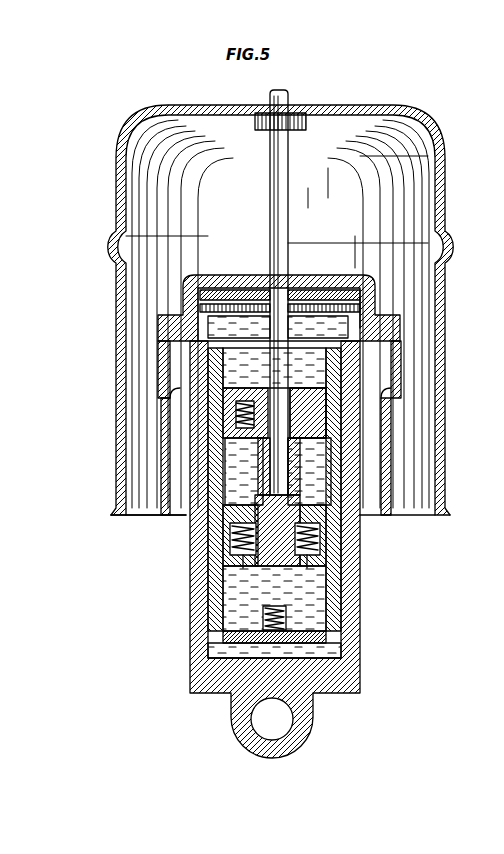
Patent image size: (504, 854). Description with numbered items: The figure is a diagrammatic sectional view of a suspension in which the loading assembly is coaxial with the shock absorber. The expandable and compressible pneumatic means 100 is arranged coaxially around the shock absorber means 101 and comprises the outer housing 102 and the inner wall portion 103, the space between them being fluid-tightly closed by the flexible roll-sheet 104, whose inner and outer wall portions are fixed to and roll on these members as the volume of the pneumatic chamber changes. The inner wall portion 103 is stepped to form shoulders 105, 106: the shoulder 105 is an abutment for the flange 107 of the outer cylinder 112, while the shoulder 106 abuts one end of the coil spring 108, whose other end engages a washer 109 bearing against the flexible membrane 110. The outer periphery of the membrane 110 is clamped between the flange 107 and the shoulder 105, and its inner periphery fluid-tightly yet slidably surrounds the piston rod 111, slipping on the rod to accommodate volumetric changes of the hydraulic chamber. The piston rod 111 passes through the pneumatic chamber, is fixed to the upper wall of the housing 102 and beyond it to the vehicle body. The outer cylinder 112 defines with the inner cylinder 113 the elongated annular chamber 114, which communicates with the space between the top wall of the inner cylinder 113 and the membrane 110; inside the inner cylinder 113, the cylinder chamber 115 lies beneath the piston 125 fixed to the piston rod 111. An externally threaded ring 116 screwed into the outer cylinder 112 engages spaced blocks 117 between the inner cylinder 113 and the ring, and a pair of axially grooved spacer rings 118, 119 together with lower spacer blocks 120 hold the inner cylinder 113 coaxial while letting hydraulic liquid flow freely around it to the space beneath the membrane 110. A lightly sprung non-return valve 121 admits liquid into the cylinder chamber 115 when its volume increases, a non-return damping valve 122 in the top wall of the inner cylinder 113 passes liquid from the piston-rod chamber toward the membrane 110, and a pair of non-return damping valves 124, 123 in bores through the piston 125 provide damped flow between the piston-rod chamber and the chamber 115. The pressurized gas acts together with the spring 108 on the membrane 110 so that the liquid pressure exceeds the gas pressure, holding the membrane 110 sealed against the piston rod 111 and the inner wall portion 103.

The expandable and compressible pneumatic means 100 is at (88, 203).
The shock absorber means 101 is at (170, 586).
The outer housing 102 is at (108, 445).
The inner wall portion 103 is at (118, 502).
The flexible roll-sheet 104 is at (420, 430).
The shoulder 105 is at (390, 320).
The shoulder 106 is at (347, 260).
The flange 107 is at (392, 352).
The coil spring 108 is at (238, 280).
The washer 109 is at (318, 282).
The flexible membrane 110 is at (362, 300).
The piston rod 111 is at (280, 160).
The outer cylinder 112 is at (352, 522).
The inner cylinder 113 is at (333, 546).
The elongated annular chamber 114 is at (338, 576).
The cylinder chamber 115 is at (215, 622).
The externally threaded ring 116 is at (250, 380).
The spaced blocks 117 is at (276, 413).
The spacer ring 118 is at (340, 437).
The spacer ring 119 is at (340, 606).
The spacer blocks 120 is at (210, 652).
The non-return valve 121 is at (268, 640).
The non-return damping valve 122 is at (244, 471).
The non-return damping valve 123 is at (302, 508).
The non-return damping valve 124 is at (240, 548).
The piston 125 is at (200, 550).